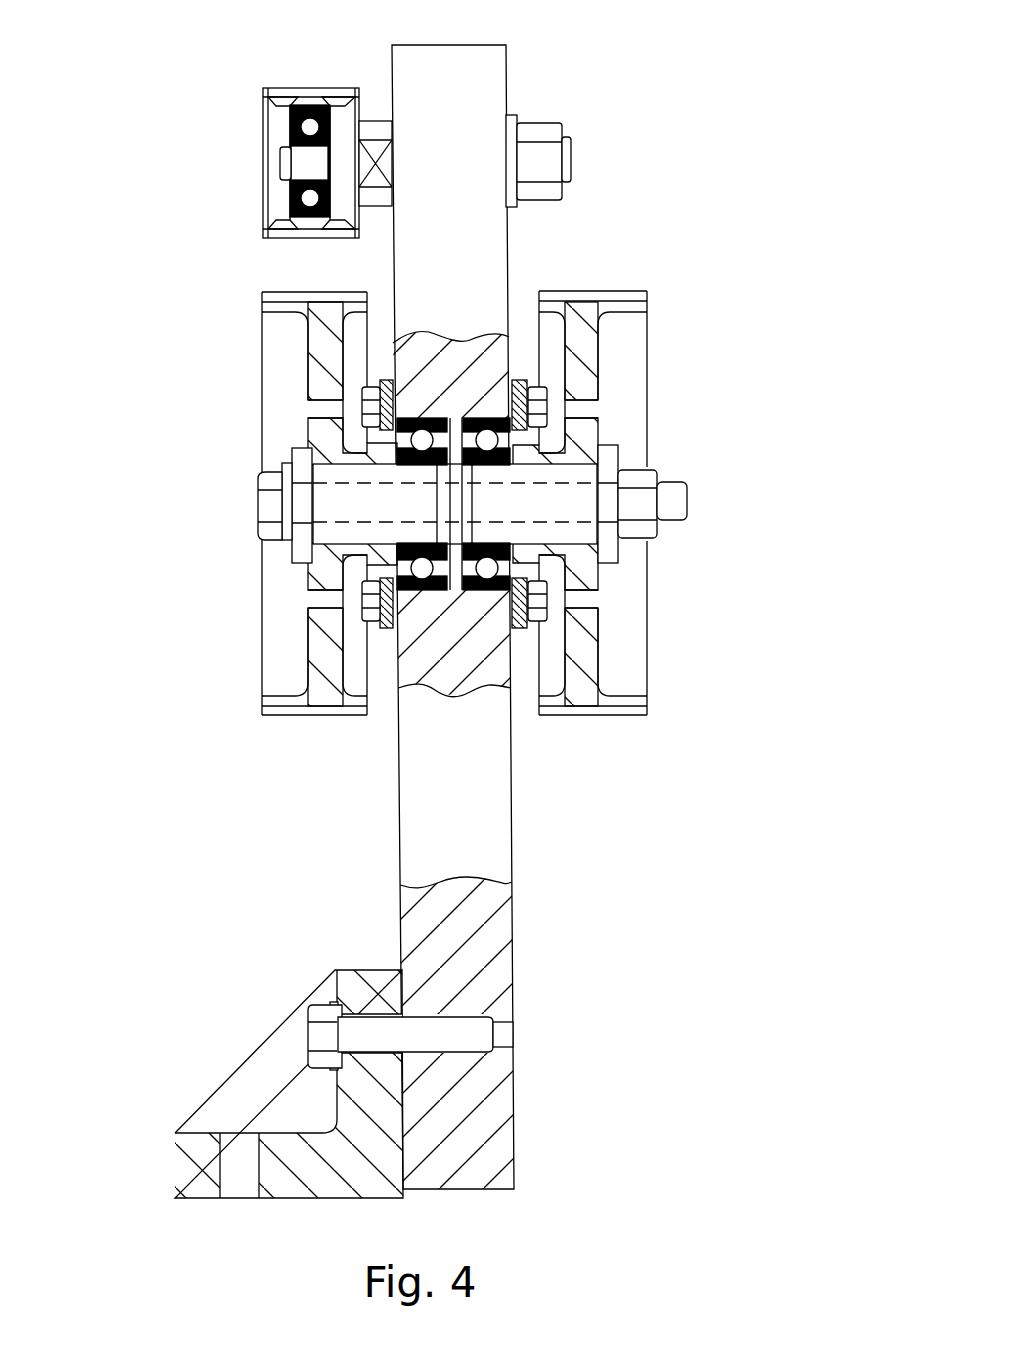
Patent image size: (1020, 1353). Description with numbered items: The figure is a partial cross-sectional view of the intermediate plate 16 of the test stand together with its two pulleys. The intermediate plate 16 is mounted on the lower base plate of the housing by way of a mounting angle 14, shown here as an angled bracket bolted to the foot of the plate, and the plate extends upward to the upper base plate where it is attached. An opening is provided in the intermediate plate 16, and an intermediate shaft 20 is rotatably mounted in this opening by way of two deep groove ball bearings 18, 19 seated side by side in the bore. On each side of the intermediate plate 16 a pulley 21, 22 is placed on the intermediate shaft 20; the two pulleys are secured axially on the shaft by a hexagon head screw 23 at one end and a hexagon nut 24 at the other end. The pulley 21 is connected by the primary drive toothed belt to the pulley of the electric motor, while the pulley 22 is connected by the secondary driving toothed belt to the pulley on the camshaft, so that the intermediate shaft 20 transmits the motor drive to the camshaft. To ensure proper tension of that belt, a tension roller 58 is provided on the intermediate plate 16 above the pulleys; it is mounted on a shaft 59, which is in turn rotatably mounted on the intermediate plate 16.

The mounting angle 14 is at (189, 1166).
The intermediate plate 16 is at (482, 76).
The deep groove ball bearing 18 is at (401, 463).
The deep groove ball bearing 19 is at (506, 464).
The intermediate shaft 20 is at (581, 531).
The pulley 21 is at (583, 362).
The pulley 22 is at (318, 325).
The hexagon head screw 23 is at (265, 503).
The hexagon nut 24 is at (646, 524).
The tension roller 58 is at (280, 121).
The shaft 59 is at (283, 167).